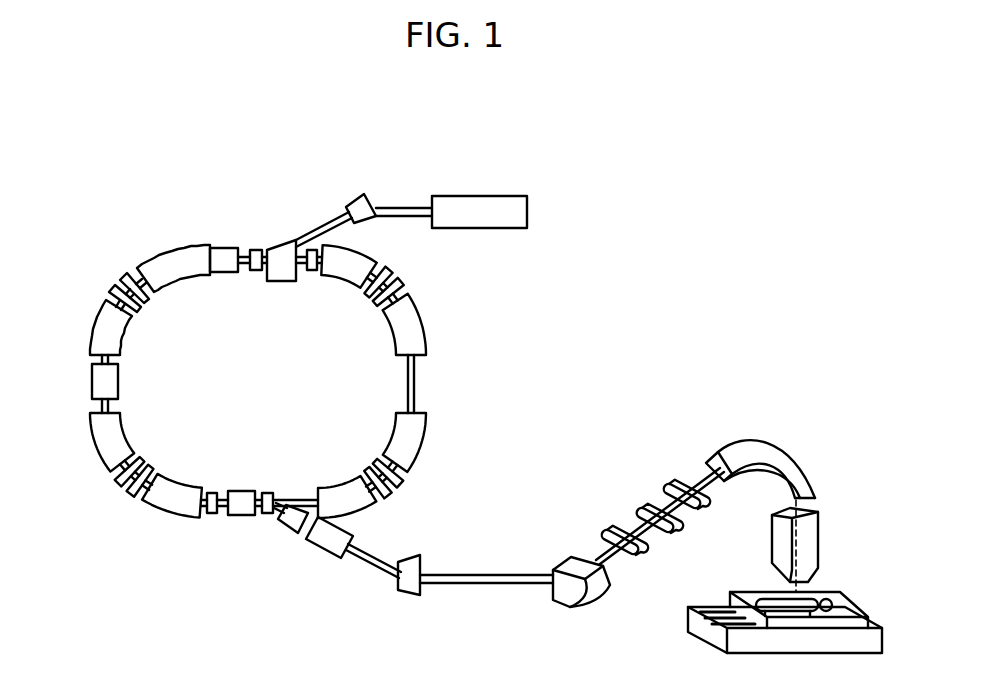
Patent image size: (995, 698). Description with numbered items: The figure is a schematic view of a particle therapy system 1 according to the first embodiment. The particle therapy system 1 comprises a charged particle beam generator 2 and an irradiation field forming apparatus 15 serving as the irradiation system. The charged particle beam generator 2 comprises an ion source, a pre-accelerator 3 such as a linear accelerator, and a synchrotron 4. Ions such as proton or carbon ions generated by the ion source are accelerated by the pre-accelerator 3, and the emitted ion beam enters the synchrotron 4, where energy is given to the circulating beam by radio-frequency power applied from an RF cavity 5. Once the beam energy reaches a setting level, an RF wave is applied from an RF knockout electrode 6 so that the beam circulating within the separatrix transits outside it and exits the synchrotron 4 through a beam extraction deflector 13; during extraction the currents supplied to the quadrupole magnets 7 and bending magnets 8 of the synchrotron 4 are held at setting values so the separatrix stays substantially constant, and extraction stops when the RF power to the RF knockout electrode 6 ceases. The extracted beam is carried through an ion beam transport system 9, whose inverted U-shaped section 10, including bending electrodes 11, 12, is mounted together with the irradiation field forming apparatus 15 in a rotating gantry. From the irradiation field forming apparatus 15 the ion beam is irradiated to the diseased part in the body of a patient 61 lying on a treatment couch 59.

The particle therapy system 1 is at (356, 569).
The charged particle beam generator 2 is at (415, 382).
The pre-accelerator 3 is at (530, 212).
The synchrotron 4 is at (103, 455).
The RF cavity 5 is at (119, 381).
The RF knockout electrode 6 is at (228, 247).
The quadrupole magnets 7 is at (152, 302).
The bending magnets 8 is at (93, 330).
The ion beam transport system 9 is at (489, 586).
The inverted U-shaped section 10 is at (700, 476).
The bending electrode 11 is at (590, 609).
The bending electrode 12 is at (755, 438).
The beam extraction deflector 13 is at (290, 527).
The irradiation field forming apparatus 15 is at (820, 526).
The treatment couch 59 is at (850, 608).
The patient 61 is at (822, 603).